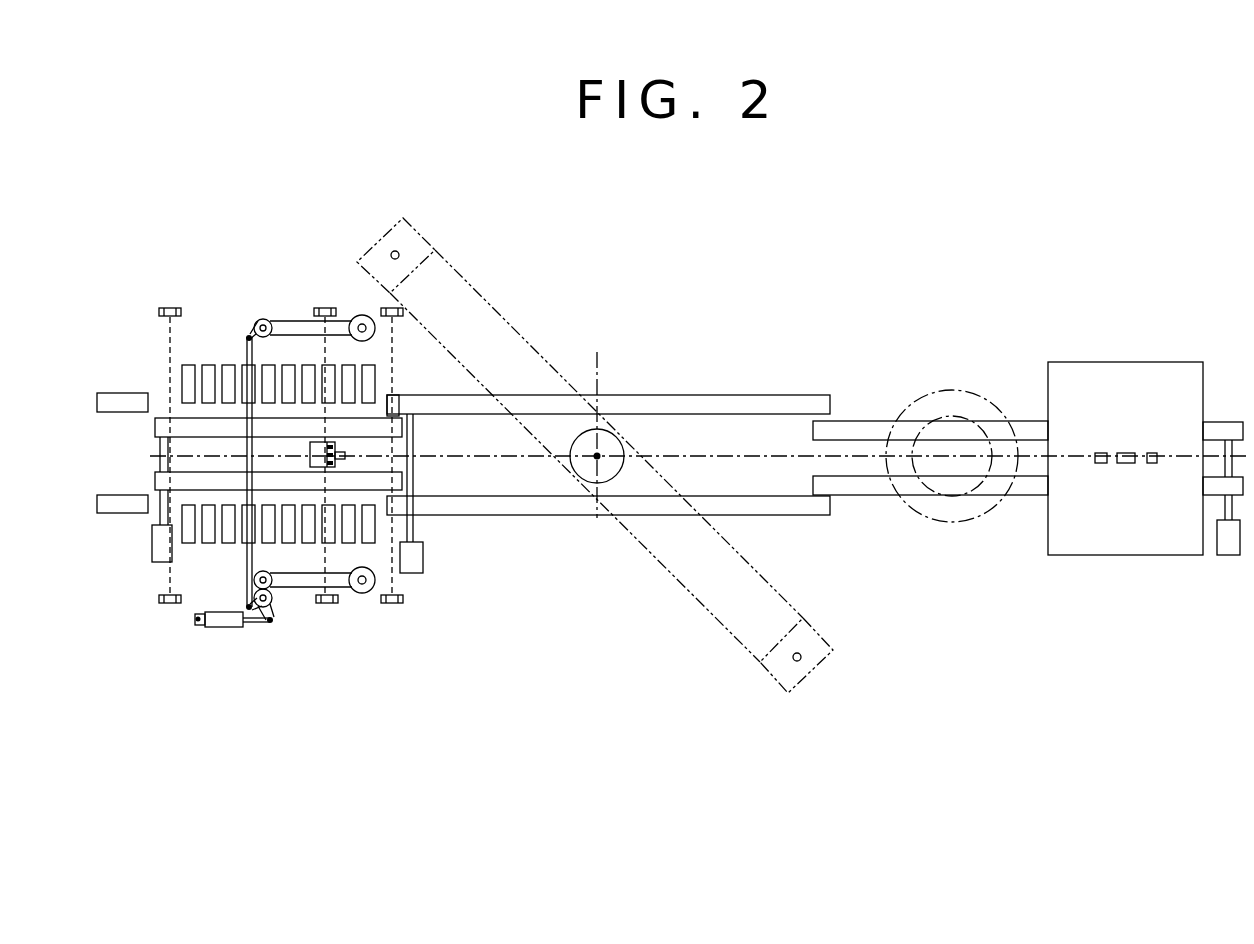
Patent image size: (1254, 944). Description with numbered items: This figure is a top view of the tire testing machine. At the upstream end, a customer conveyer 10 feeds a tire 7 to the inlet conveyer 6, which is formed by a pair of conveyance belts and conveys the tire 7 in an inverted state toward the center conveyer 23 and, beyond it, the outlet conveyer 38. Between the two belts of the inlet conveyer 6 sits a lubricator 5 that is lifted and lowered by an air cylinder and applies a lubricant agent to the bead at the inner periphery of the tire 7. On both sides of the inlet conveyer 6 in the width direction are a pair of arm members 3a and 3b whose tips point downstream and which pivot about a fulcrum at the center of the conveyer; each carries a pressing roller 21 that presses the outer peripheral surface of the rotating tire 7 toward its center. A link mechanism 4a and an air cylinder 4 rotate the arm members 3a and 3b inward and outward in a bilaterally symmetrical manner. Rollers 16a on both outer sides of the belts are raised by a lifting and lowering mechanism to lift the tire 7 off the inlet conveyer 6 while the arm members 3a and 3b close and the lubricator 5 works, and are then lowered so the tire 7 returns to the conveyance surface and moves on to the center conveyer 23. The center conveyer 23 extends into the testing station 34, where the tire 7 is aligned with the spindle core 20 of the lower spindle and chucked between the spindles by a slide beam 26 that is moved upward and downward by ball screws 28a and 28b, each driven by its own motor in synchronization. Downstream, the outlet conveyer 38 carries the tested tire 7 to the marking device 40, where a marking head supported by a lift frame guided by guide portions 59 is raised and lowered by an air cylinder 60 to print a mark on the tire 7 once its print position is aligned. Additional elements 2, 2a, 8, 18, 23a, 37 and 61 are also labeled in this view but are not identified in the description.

The motor 2 is at (152, 545).
The drive shaft 2a is at (160, 458).
The arm member 3a is at (295, 588).
The arm member 3b is at (298, 320).
The air cylinder 4 is at (224, 628).
The link mechanism 4a is at (247, 348).
The lubricator 5 is at (345, 456).
The inlet conveyer 6 is at (187, 483).
The tire 7 is at (393, 604).
The nut 8 is at (170, 605).
The customer conveyer 10 is at (102, 495).
The roller 16a is at (228, 544).
The arm 18 is at (660, 455).
The spindle core 20 is at (595, 457).
The pressing roller 21 is at (360, 316).
The center conveyer 23 is at (725, 504).
The motor 23a is at (424, 557).
The slide beam 26 is at (510, 324).
The ball screw 28a is at (420, 247).
The ball screw 28b is at (765, 670).
The testing station 34 is at (752, 255).
The nut 37 is at (327, 604).
The outlet conveyer 38 is at (850, 482).
The marking device 40 is at (1125, 338).
The guide portion 59 is at (1100, 464).
The air cylinder 60 is at (1126, 464).
The motor 61 is at (1228, 556).